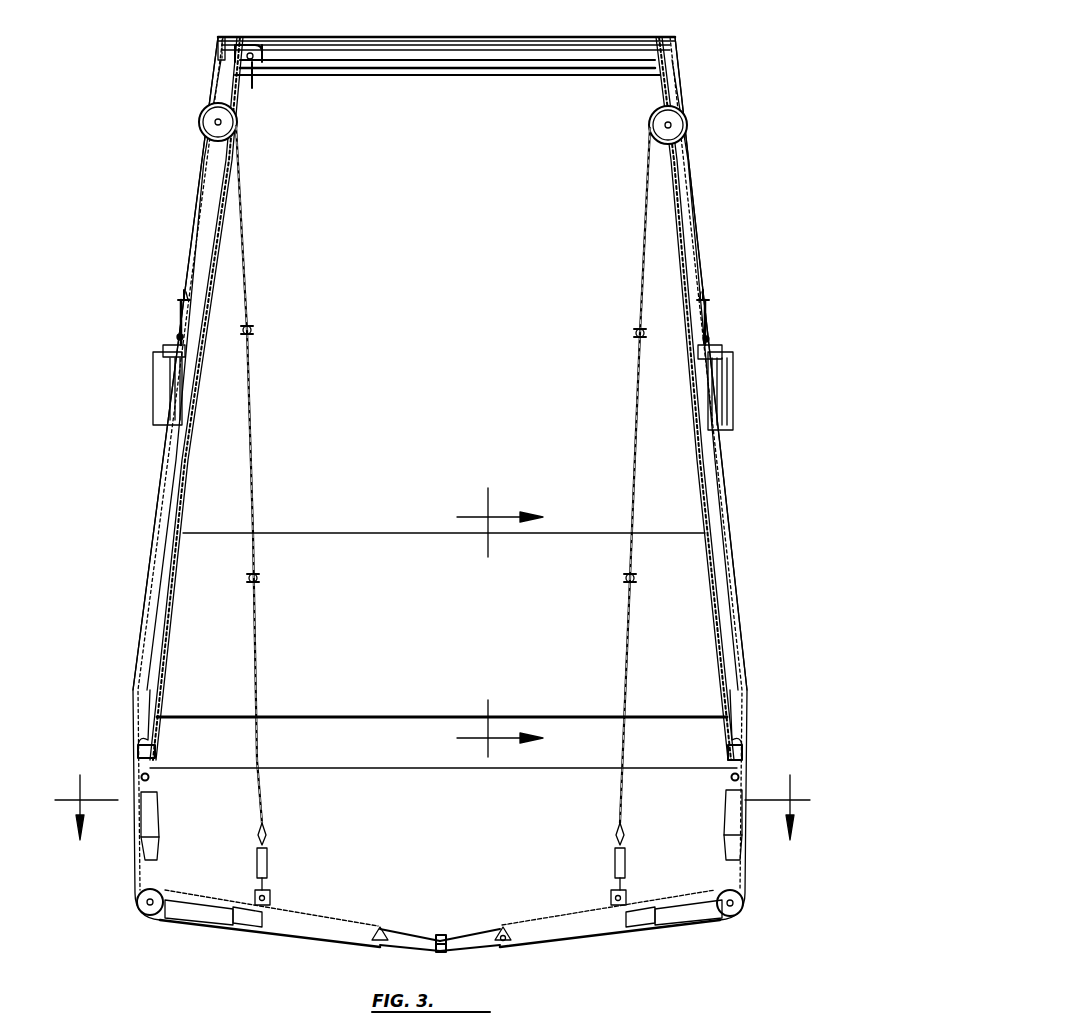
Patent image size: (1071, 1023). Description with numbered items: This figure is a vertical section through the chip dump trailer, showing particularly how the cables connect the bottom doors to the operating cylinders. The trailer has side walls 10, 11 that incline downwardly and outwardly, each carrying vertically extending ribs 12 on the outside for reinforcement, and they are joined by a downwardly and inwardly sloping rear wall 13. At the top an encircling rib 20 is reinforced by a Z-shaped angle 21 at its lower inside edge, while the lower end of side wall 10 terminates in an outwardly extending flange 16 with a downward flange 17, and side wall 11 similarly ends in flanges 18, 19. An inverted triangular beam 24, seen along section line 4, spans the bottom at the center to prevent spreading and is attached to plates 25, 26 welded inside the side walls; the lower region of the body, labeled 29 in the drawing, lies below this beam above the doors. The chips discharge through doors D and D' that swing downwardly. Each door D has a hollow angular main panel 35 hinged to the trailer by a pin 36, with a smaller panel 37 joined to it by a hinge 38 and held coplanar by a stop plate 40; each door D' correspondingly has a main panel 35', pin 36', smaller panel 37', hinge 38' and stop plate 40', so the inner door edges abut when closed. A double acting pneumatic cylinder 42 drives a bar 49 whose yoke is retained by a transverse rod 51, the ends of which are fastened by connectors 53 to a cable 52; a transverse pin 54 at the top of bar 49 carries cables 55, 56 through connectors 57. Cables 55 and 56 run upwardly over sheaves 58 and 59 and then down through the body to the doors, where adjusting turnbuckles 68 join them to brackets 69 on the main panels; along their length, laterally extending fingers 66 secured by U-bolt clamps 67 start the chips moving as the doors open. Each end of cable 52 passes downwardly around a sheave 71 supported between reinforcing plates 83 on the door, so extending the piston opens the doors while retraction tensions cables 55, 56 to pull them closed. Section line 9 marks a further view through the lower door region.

The section line 4- 4 is at (478, 512).
The section line 9- 9 is at (427, 807).
The side wall 10 is at (184, 461).
The side wall 11 is at (694, 448).
The ribs 12 is at (214, 80).
The rear wall 13 is at (445, 317).
The flange 16 is at (140, 738).
The flange 17 is at (135, 753).
The flange 18 is at (740, 742).
The flange 19 is at (744, 751).
The rib 20 is at (250, 44).
The Z-shaped angle 21 is at (252, 70).
The inverted triangular shaped beam 24 is at (404, 534).
The plate 25 is at (174, 621).
The plate 26 is at (712, 614).
The lower panel area 29 is at (419, 829).
The main panel 35 is at (611, 911).
The main panel 35' is at (270, 914).
The pin 36 is at (756, 773).
The pin 36' is at (169, 788).
The smaller panel 37 is at (470, 928).
The smaller panel 37' is at (415, 929).
The hinge 38 is at (513, 921).
The hinge 38' is at (396, 917).
The stop plate 40 is at (492, 951).
The stop plate 40' is at (413, 950).
The pneumatic cylinder 42 is at (160, 399).
The bar 49 is at (180, 318).
The transverse rod 51 is at (177, 337).
The cable 52 is at (140, 606).
The connectors 53 is at (165, 352).
The transverse pin 54 is at (185, 298).
The cable 55 is at (694, 212).
The cable 56 is at (190, 230).
The connectors 57 is at (185, 292).
The sheave 58 is at (678, 120).
The sheave 59 is at (200, 122).
The fingers 66 is at (255, 328).
The U-bolt clamps 67 is at (243, 332).
The adjusting turnbuckle 68 is at (268, 865).
The bracket 69 is at (270, 897).
The sheave 71 is at (140, 910).
The reinforcing plates 83 is at (152, 881).
The doors D is at (558, 896).
The doors D' is at (329, 901).